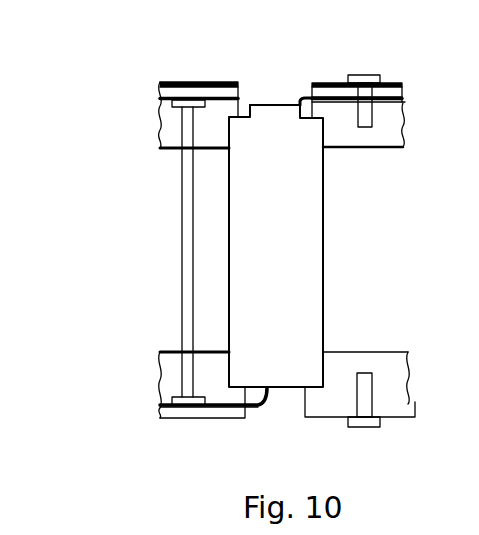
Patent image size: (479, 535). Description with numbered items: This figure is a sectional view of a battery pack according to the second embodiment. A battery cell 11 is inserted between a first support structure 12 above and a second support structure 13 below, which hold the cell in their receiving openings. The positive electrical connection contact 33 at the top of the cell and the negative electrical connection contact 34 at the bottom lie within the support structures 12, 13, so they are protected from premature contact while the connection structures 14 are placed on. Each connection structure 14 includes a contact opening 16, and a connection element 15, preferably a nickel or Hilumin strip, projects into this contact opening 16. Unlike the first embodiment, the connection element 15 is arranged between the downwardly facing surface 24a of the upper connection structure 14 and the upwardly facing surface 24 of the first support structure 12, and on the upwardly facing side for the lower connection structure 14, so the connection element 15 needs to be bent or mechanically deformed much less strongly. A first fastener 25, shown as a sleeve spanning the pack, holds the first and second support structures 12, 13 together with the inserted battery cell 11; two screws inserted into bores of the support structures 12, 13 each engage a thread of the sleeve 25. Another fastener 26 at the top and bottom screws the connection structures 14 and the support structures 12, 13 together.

The battery cell 11 is at (313, 236).
The first support structure 12 is at (395, 138).
The second support structure 13 is at (403, 370).
The connection structure 14 is at (390, 82).
The connection element 15 is at (300, 98).
The contact opening 16 is at (278, 82).
The upwardly facing surface 24 is at (402, 102).
The downwardly facing surface 24a is at (402, 97).
The first fastener 25 is at (185, 220).
The fastener 26 is at (368, 77).
The positive electrical connection contact 33 is at (265, 107).
The negative electrical connection contact 34 is at (267, 387).